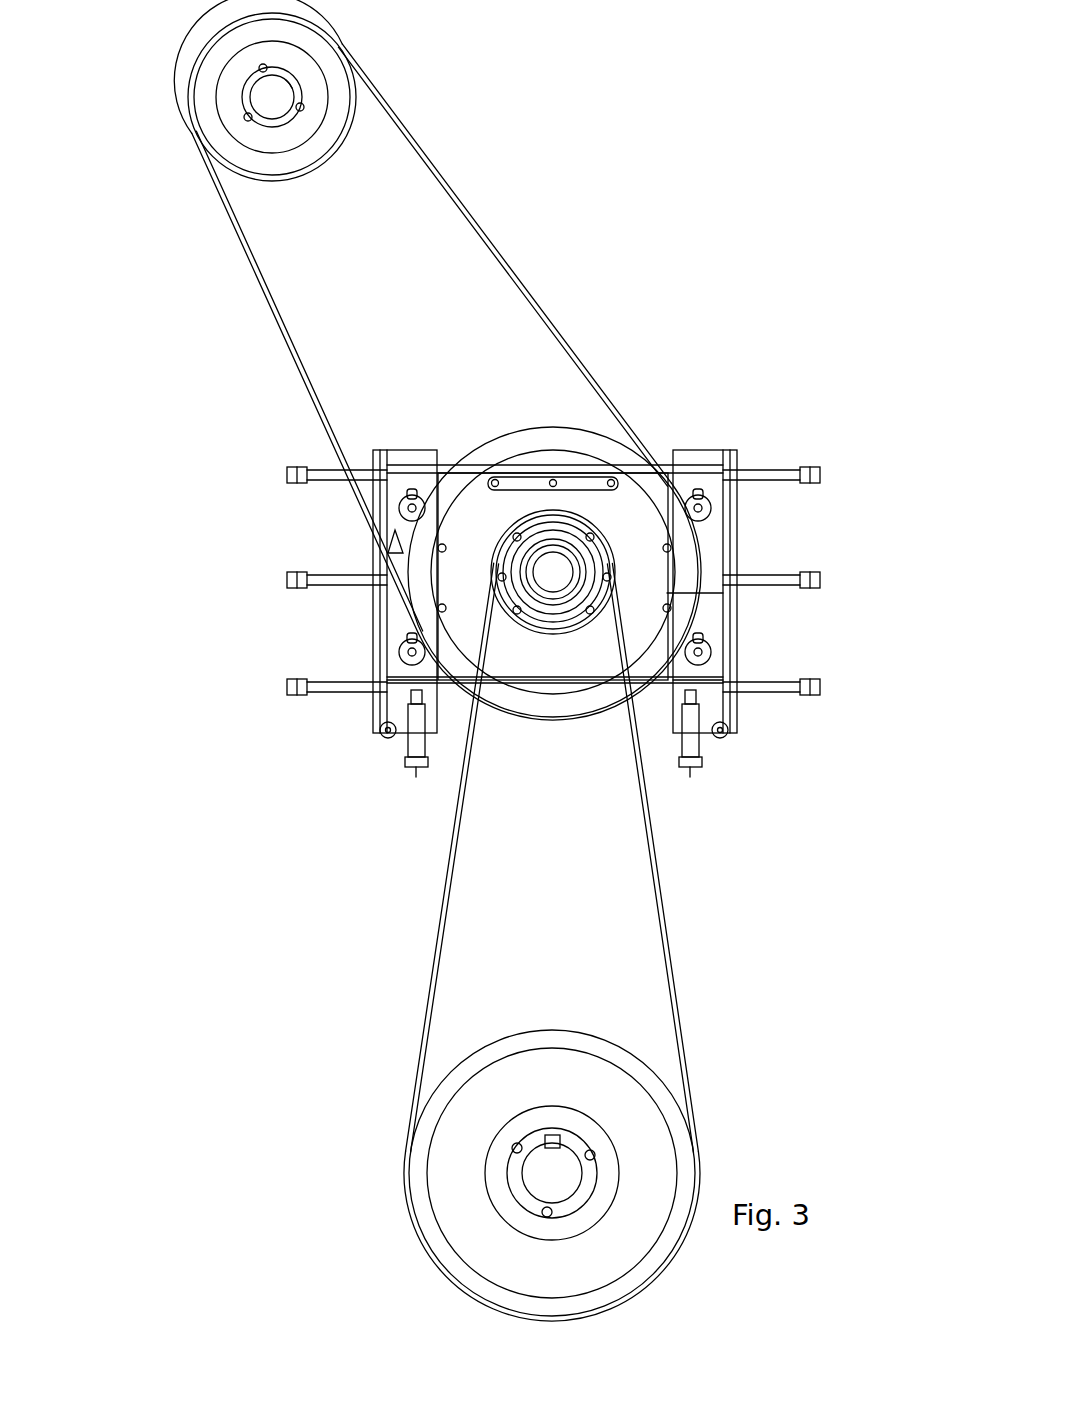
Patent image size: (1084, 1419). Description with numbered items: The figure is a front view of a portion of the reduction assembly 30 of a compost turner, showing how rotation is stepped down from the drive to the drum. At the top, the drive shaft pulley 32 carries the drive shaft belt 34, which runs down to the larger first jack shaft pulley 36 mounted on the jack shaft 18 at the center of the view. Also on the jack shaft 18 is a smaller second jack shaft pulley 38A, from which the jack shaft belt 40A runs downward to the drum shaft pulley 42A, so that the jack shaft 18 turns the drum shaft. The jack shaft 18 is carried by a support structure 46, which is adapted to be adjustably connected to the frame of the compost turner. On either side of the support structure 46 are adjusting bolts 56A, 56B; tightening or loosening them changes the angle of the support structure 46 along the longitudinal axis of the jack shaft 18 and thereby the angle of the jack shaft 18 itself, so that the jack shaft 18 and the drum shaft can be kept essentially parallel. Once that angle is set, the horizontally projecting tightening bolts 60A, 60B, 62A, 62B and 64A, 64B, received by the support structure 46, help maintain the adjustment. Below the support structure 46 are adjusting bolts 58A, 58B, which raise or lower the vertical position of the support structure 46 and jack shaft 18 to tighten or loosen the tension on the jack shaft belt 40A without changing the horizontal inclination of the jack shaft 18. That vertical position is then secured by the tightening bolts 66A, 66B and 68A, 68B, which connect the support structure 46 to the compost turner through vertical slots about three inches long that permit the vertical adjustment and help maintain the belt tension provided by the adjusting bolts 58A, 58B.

The reduction assembly 30 is at (662, 91).
The drive shaft pulley 32 is at (230, 107).
The drive shaft belt 34 is at (262, 290).
The jack shaft 18 is at (555, 577).
The first jack shaft pulley 36 is at (622, 517).
The second jack shaft pulley 38A is at (605, 598).
The support structure 46 is at (398, 548).
The tightening bolt 60A is at (300, 470).
The tightening bolt 60B is at (787, 470).
The tightening bolt 62A is at (325, 580).
The tightening bolt 62B is at (790, 576).
The tightening bolt 64A is at (315, 684).
The tightening bolt 64B is at (790, 682).
The tightening bolt 66A is at (410, 497).
The tightening bolt 66B is at (702, 497).
The tightening bolt 68A is at (400, 648).
The tightening bolt 68B is at (715, 643).
The adjusting bolt 56A is at (382, 738).
The adjusting bolt 56B is at (722, 738).
The adjusting bolt 58A is at (415, 757).
The adjusting bolt 58B is at (690, 760).
The jack shaft belt 40A is at (430, 965).
The drum shaft pulley 42A is at (473, 1222).